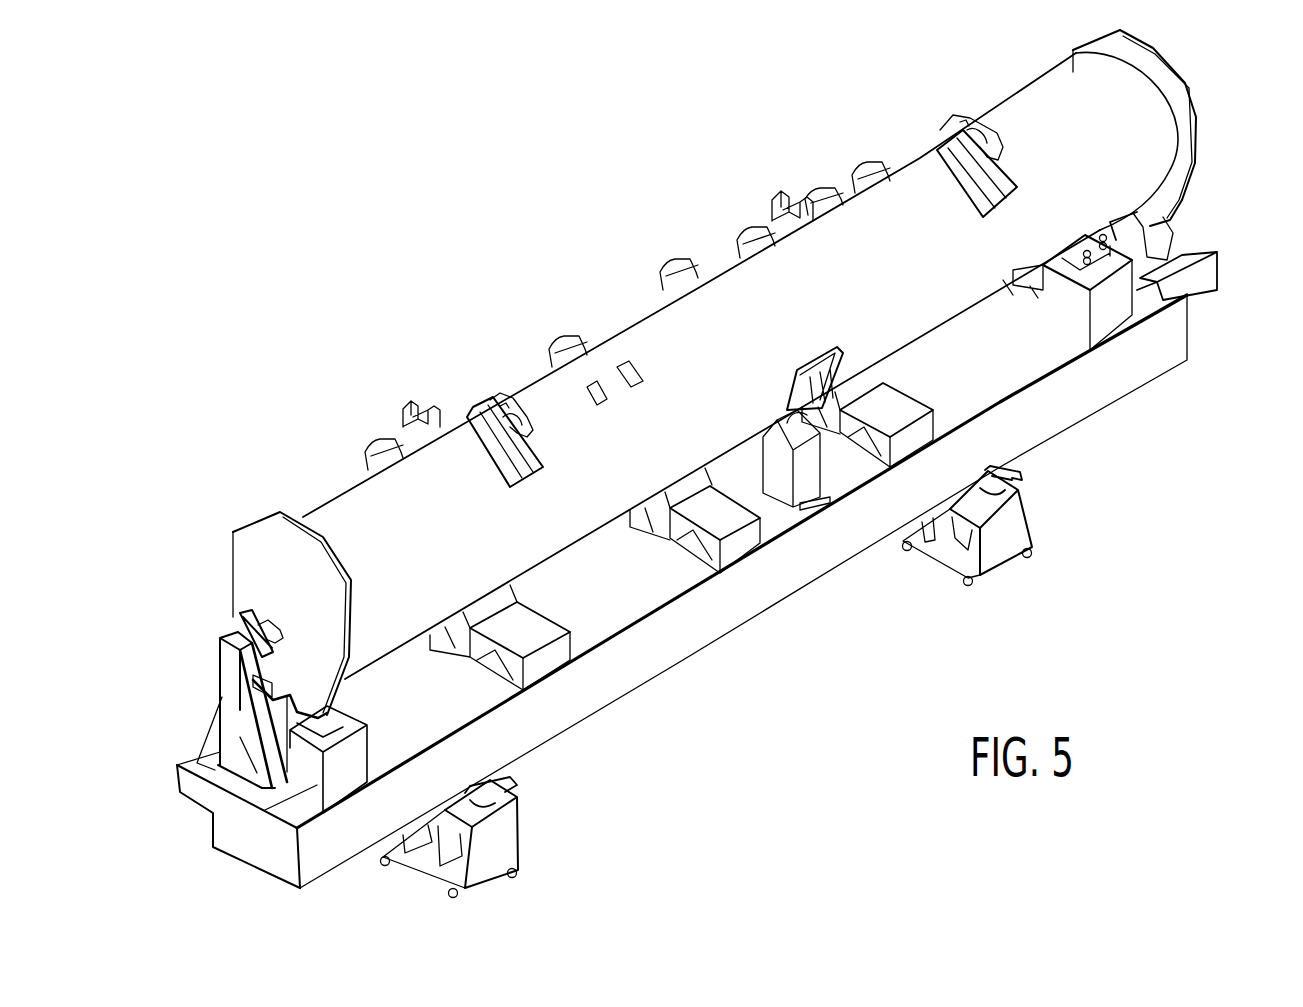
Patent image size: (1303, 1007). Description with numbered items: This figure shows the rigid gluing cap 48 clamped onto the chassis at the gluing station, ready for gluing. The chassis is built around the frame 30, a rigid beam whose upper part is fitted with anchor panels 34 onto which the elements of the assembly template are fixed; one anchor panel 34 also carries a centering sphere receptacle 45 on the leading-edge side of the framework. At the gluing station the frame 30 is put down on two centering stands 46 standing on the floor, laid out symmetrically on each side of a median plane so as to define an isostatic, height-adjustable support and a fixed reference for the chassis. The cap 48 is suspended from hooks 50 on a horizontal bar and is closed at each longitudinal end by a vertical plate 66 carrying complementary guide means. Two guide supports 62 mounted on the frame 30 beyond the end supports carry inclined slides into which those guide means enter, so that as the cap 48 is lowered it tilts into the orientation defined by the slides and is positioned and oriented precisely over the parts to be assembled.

The frame 30 is at (1155, 358).
The anchor panels 34 is at (548, 665).
The centering sphere receptacle 45 is at (785, 425).
The centering stands 46 is at (1018, 516).
The gluing cap 48 is at (635, 324).
The hooks 50 is at (524, 392).
The guide supports 62 is at (216, 688).
The vertical plates 66 is at (250, 540).